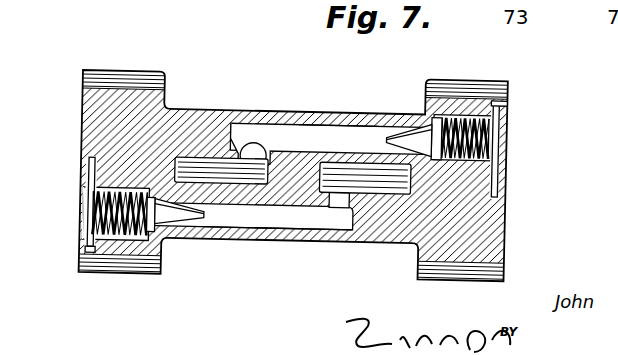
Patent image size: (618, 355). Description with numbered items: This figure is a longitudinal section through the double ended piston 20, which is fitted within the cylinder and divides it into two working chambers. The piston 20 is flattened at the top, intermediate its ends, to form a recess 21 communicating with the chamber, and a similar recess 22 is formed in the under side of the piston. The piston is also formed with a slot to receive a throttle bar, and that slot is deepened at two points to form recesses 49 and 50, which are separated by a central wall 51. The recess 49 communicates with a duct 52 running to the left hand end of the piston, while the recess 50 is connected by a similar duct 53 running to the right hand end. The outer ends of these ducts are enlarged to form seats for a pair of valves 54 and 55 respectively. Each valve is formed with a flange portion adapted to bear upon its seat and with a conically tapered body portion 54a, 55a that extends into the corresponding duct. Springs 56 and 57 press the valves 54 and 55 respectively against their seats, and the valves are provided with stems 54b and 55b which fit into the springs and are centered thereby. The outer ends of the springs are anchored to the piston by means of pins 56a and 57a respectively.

The piston 20 is at (500, 228).
The recess 21 is at (332, 126).
The recess 22 is at (250, 235).
The recess 49 is at (399, 192).
The recess 50 is at (196, 157).
The central wall 51 is at (251, 143).
The duct 52 is at (242, 220).
The duct 53 is at (327, 133).
The valve 54 is at (139, 222).
The conically tapered body portion 54a is at (183, 222).
The stem 54b is at (118, 224).
The valve 55 is at (427, 123).
The conically tapered body portion 55a is at (380, 121).
The stem 55b is at (440, 162).
The spring 56 is at (93, 272).
The pin 56a is at (90, 222).
The spring 57 is at (495, 165).
The pin 57a is at (509, 150).